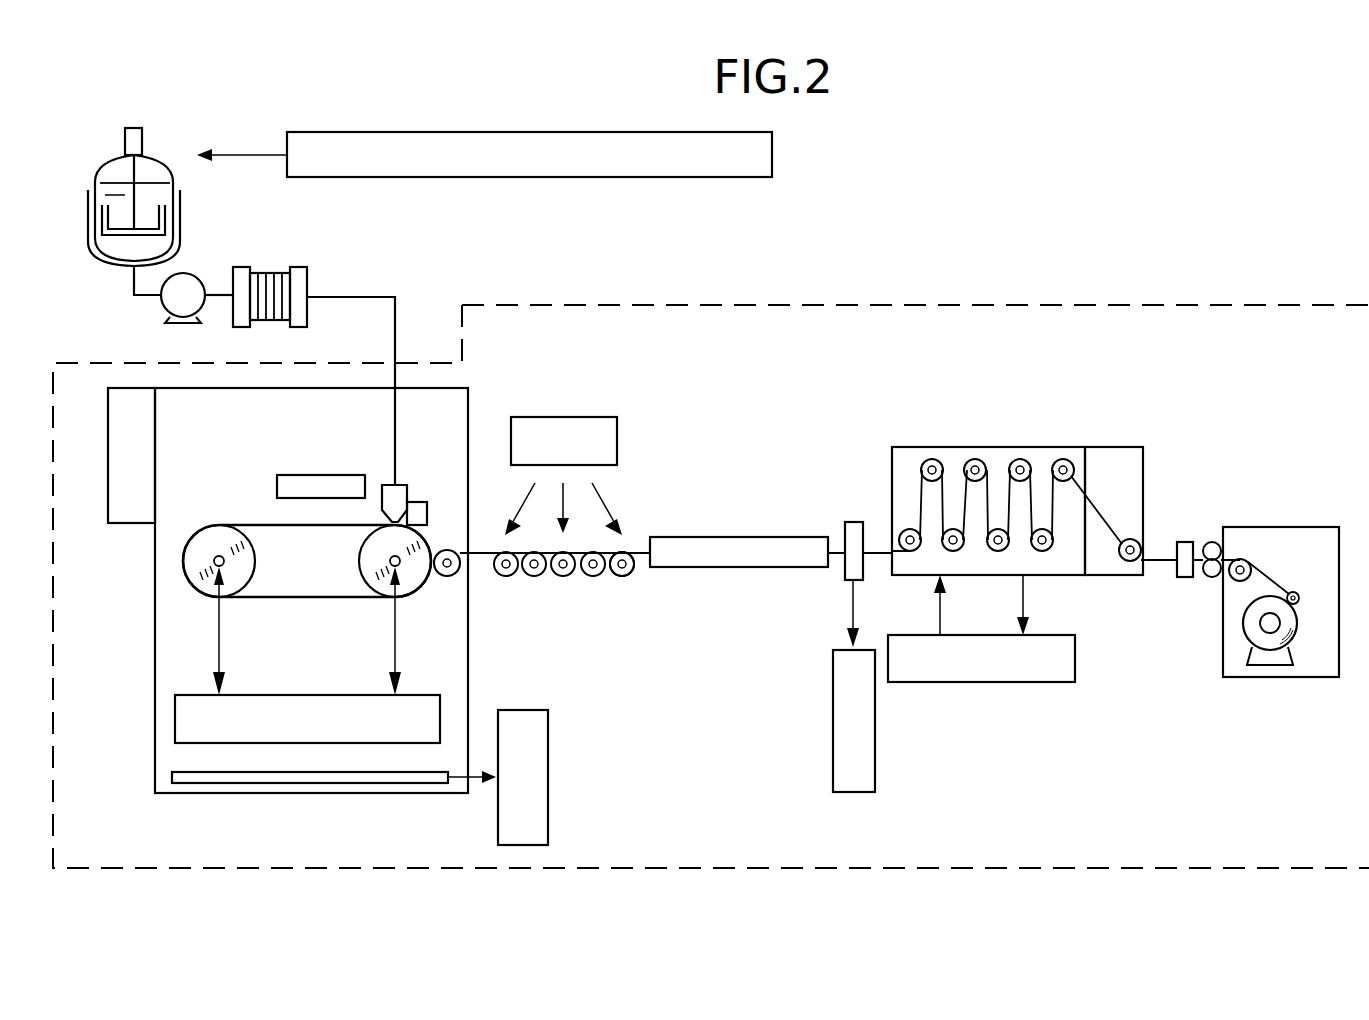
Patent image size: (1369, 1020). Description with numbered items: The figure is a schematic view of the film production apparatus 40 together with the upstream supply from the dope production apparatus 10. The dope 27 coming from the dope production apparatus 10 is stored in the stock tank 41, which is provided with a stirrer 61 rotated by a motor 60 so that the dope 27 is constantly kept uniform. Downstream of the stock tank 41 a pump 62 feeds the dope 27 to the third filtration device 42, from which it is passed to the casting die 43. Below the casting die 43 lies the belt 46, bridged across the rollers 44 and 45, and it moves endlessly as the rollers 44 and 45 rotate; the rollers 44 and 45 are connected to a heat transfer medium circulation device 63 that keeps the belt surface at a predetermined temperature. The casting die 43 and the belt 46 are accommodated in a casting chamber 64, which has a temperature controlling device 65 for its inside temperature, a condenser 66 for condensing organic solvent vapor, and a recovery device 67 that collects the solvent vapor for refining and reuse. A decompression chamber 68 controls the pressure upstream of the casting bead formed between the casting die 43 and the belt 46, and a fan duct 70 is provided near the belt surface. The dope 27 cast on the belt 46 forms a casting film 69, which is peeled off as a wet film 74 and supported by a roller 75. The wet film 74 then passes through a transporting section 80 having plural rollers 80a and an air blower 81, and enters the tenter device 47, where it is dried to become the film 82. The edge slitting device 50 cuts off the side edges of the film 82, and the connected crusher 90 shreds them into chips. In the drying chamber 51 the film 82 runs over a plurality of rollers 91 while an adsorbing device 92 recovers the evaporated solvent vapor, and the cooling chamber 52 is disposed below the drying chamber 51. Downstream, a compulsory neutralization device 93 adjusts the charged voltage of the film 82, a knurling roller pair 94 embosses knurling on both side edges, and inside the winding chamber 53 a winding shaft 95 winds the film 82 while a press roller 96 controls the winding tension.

The dope production apparatus 10 is at (772, 155).
The dope 27 is at (158, 240).
The film production apparatus 40 is at (752, 305).
The stock tank 41 is at (108, 160).
The third filtration device 42 is at (307, 282).
The casting die 43 is at (400, 485).
The roller 44 is at (208, 597).
The roller 45 is at (383, 597).
The belt 46 is at (425, 540).
The tenter device 47 is at (712, 570).
The edge slitting device 50 is at (853, 522).
The drying chamber 51 is at (1044, 447).
The cooling chamber 52 is at (1110, 447).
The winding chamber 53 is at (1280, 527).
The motor 60 is at (132, 128).
The stirrer 61 is at (102, 218).
The pump 62 is at (165, 320).
The heat transfer medium circulation device 63 is at (175, 722).
The casting chamber 64 is at (197, 797).
The temperature controlling device 65 is at (130, 523).
The condenser 66 is at (172, 778).
The recovery device 67 is at (548, 775).
The decompression chamber 68 is at (425, 504).
The casting film 69 is at (312, 525).
The fan duct 70 is at (318, 475).
The wet film 74 is at (474, 572).
The roller 75 is at (440, 577).
The transporting section 80 is at (497, 605).
The roller 80a is at (593, 566).
The air blower 81 is at (565, 417).
The film 82 is at (840, 551).
The crusher 90 is at (833, 722).
The rollers 91 is at (1015, 463).
The adsorbing device 92 is at (977, 688).
The compulsory neutralization device 93 is at (1183, 542).
The knurling roller pair 94 is at (1212, 584).
The winding shaft 95 is at (1268, 665).
The press roller 96 is at (1294, 592).